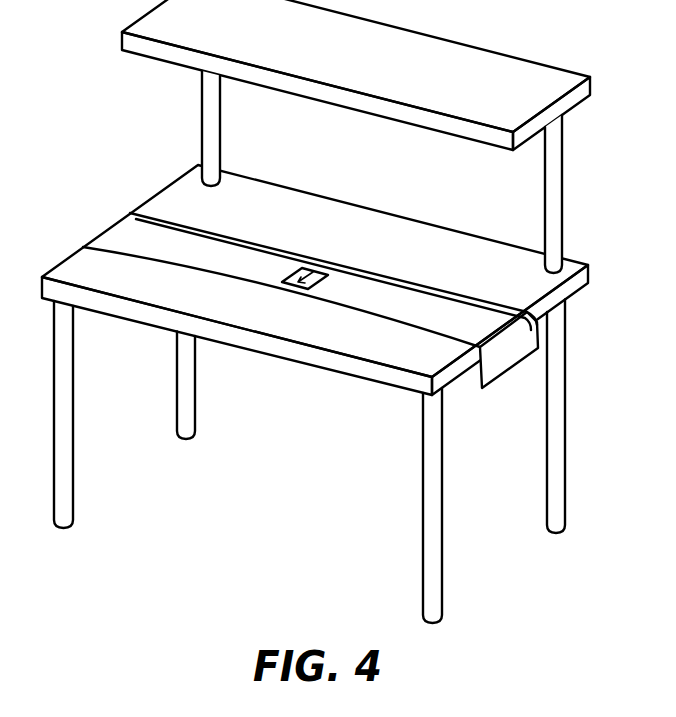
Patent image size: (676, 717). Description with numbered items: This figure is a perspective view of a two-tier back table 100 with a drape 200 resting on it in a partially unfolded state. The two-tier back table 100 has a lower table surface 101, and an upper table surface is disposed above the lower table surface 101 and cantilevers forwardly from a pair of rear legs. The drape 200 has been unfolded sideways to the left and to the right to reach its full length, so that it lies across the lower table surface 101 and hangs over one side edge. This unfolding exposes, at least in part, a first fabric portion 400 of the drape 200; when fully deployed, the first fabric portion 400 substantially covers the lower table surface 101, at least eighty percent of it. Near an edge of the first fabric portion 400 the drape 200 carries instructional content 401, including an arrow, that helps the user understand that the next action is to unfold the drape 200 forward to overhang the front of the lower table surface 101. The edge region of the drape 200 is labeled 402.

The two-tier back table 100 is at (316, 311).
The lower table surface 101 is at (290, 325).
The drape 200 is at (125, 245).
The first fabric portion 400 is at (310, 295).
The instructional content 401 is at (318, 276).
The mat edge 402 is at (250, 247).